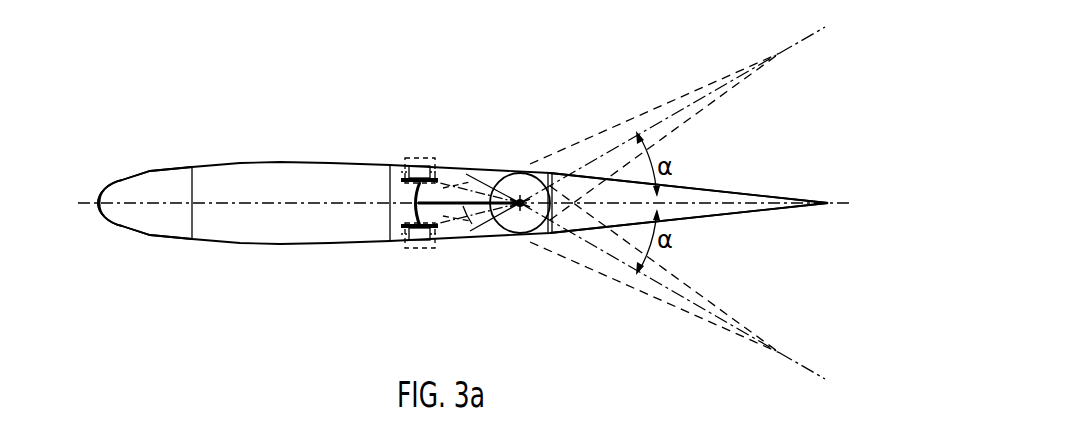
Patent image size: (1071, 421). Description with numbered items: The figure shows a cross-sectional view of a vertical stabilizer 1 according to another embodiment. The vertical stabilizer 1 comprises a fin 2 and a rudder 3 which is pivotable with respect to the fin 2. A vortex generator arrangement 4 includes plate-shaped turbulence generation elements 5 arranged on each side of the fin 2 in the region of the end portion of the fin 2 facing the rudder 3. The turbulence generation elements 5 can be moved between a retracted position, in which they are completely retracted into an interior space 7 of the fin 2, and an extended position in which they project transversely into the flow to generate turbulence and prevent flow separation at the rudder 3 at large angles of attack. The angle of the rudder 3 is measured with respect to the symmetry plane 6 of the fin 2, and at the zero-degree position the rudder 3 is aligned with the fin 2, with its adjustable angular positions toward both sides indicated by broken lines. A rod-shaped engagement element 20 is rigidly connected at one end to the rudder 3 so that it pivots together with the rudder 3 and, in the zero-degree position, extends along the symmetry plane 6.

The vertical stabilizer 1 is at (213, 138).
The fin 2 is at (146, 187).
The rudder 3 is at (777, 194).
The vortex generator arrangement 4 is at (396, 251).
The turbulence generation element 5 is at (424, 159).
The symmetry plane 6 is at (97, 206).
The interior space 7 is at (466, 222).
The engagement element 20 is at (460, 200).